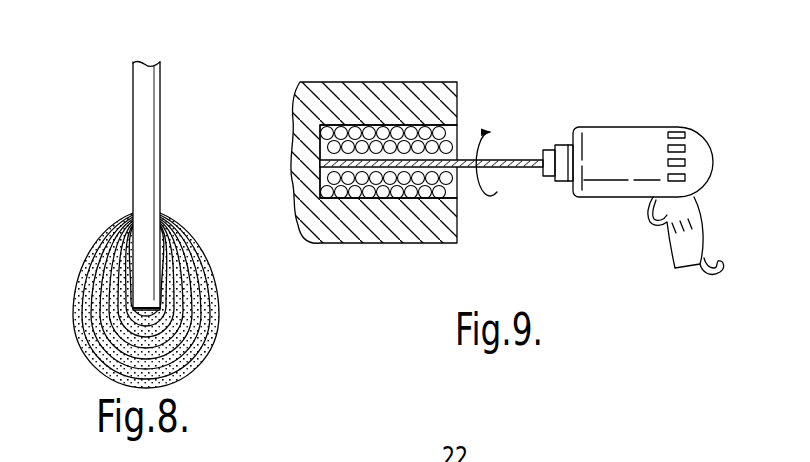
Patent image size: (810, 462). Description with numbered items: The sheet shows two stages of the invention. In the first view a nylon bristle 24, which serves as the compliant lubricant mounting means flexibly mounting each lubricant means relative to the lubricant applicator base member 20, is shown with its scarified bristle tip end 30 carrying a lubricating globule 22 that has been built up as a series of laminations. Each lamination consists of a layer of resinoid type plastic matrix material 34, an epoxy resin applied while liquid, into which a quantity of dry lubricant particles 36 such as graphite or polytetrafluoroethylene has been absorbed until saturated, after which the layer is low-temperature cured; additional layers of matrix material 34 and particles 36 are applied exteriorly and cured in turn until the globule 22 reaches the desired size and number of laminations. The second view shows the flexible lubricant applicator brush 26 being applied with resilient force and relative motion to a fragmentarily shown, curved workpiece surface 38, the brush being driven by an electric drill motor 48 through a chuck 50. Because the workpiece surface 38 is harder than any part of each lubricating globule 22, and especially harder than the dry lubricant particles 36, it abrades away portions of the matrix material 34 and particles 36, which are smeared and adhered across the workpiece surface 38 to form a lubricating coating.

In FIG. 9, the lubricant applicator base member 20 is at (510, 176).
In FIG. 8, the lubricating globule 22 is at (169, 236).
In FIG. 8, the nylon bristle 24 is at (133, 120).
In FIG. 9, the flexible lubricant applicator brush 26 is at (483, 108).
In FIG. 8, the bristle tip end 30 is at (150, 258).
In FIG. 8, the resinoid type plastic matrix material 34 is at (98, 306).
In FIG. 8, the dry lubricant particles 36 is at (80, 272).
In FIG. 9, the workpiece surface 38 is at (386, 105).
In FIG. 9, the electric drill motor 48 is at (640, 116).
In FIG. 9, the chuck 50 is at (551, 138).